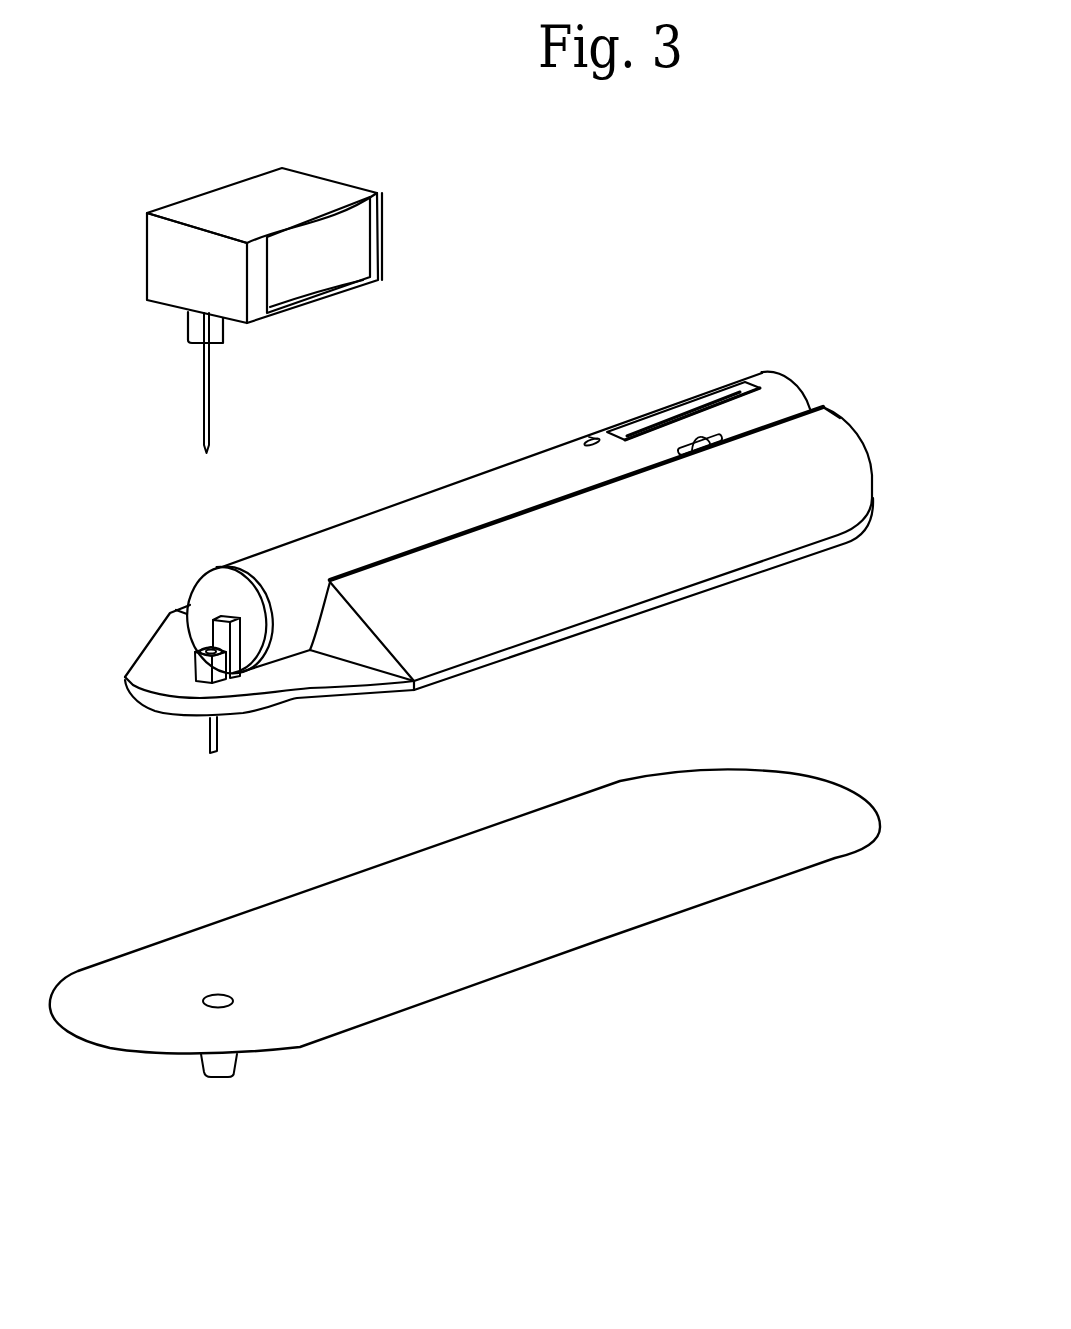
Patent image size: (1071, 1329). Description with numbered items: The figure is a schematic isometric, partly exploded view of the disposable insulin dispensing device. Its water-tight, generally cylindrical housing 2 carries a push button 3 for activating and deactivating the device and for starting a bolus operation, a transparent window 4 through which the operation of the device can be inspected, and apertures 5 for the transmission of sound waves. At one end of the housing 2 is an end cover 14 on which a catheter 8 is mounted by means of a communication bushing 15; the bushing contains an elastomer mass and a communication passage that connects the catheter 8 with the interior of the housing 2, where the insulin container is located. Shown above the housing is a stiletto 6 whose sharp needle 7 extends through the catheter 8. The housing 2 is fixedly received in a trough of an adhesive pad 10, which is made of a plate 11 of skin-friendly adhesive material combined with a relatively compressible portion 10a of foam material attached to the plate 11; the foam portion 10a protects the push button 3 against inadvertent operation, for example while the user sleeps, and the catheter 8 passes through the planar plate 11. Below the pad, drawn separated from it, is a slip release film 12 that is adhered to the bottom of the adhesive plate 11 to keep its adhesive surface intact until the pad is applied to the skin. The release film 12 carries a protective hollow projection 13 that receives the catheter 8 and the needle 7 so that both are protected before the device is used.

The housing 2 is at (445, 516).
The push button 3 is at (720, 443).
The transparent window 4 is at (688, 408).
The apertures 5 is at (593, 434).
The stiletto 6 is at (237, 212).
The needle 7 is at (207, 405).
The catheter 8 is at (198, 740).
The adhesive pad 10 is at (582, 589).
The compressible portion 10a is at (408, 610).
The plate 11 is at (283, 677).
The slip release film 12 is at (512, 933).
The protective hollow projection 13 is at (222, 1065).
The end cover 14 is at (213, 585).
The communication bushing 15 is at (196, 670).